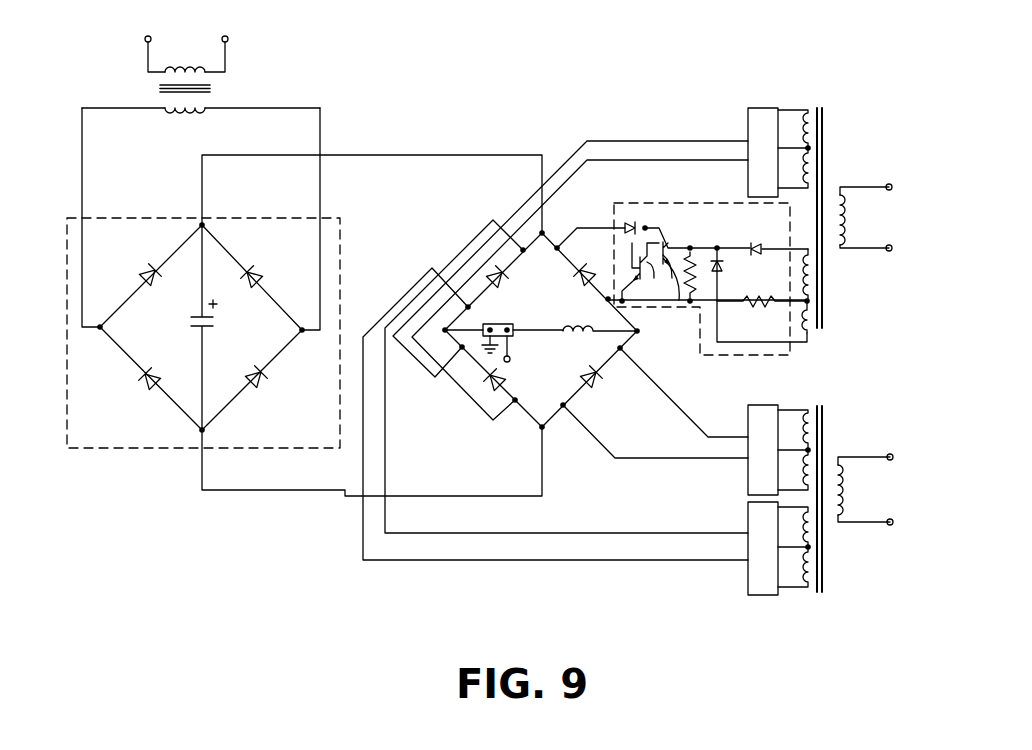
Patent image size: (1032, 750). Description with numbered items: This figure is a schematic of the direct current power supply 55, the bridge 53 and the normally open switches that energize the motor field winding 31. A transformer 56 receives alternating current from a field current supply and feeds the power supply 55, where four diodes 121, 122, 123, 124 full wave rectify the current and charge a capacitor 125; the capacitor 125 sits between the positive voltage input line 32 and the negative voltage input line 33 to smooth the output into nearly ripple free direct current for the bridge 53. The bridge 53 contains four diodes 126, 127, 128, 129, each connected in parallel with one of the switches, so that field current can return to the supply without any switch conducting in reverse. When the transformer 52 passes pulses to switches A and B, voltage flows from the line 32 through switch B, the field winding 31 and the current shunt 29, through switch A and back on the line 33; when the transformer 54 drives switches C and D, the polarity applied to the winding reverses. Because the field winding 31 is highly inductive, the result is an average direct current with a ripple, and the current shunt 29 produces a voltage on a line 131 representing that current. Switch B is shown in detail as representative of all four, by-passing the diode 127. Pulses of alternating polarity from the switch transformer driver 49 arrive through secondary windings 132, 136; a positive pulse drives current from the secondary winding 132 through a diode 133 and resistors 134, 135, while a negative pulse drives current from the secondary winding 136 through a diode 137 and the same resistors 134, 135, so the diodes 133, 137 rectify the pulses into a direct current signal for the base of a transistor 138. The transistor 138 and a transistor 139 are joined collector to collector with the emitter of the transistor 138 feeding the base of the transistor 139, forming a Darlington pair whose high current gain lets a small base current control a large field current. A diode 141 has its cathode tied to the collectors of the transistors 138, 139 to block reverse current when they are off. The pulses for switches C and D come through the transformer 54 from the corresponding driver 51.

The transformer 56 is at (252, 73).
The direct current power supply 55 is at (118, 445).
The diode 121 is at (148, 268).
The diode 122 is at (147, 376).
The diode 123 is at (263, 376).
The diode 124 is at (253, 265).
The capacitor 125 is at (201, 315).
The positive voltage input line 32 is at (394, 155).
The negative voltage input line 33 is at (345, 497).
The bridge 53 is at (575, 448).
The diode 129 is at (513, 273).
The diode 127 is at (572, 268).
The diode 126 is at (480, 377).
The diode 128 is at (605, 376).
The current shunt 29 is at (504, 323).
The line 131 is at (512, 363).
The field winding 31 is at (569, 349).
The switch B is at (690, 210).
The diode 141 is at (634, 224).
The resistor 134 is at (698, 270).
The diode 133 is at (752, 247).
The diode 137 is at (722, 262).
The secondary winding 132 is at (802, 273).
The secondary winding 136 is at (812, 340).
The resistor 135 is at (756, 309).
The transistor 139 is at (652, 290).
The transistor 138 is at (680, 306).
The transformer 52 is at (852, 100).
The switch transformer driver 49 is at (893, 217).
The transformer 54 is at (866, 394).
The input from FIG. 8 51 is at (893, 489).